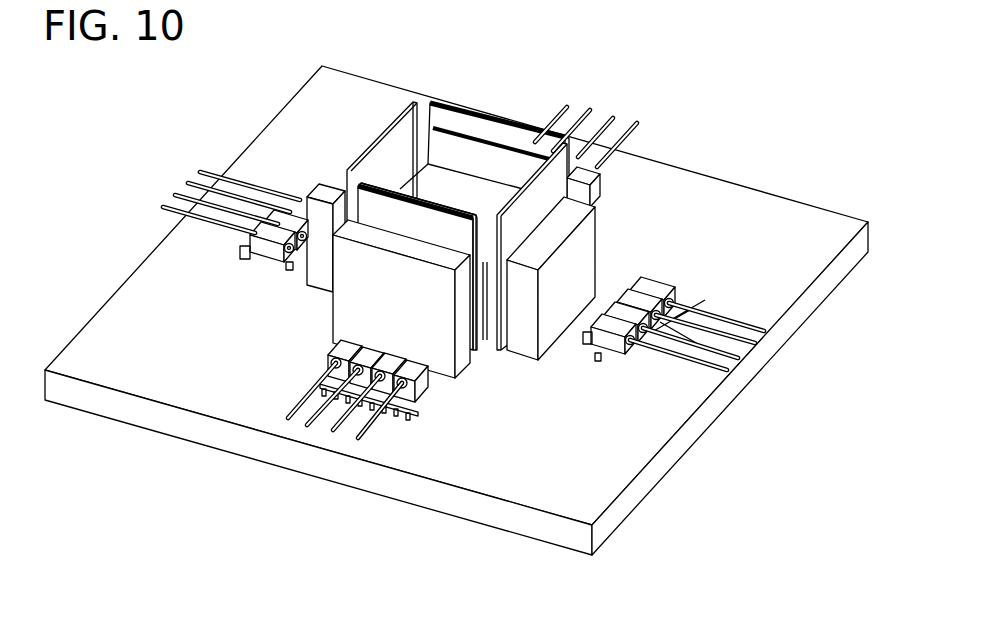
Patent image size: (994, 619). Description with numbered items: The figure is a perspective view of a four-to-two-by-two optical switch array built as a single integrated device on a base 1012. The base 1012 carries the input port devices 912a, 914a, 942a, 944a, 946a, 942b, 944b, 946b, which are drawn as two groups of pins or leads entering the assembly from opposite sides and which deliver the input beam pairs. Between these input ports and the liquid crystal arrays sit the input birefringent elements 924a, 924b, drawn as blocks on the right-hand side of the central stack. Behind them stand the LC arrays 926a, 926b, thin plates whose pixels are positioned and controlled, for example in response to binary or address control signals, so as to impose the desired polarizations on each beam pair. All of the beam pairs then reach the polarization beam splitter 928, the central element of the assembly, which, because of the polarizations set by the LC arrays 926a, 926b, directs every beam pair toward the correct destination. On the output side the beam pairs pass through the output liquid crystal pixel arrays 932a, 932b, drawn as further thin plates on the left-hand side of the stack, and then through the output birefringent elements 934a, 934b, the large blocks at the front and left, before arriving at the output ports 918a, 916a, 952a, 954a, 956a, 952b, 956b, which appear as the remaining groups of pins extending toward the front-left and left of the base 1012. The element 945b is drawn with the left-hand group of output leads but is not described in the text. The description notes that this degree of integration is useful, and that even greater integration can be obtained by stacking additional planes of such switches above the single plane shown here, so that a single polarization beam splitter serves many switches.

The base 1012 is at (655, 489).
The input port device 912a is at (638, 123).
The input port device 914a is at (767, 333).
The output port 916a is at (357, 441).
The output port 918a is at (201, 172).
The input birefringent element 924a is at (572, 178).
The input birefringent element 924b is at (597, 272).
The LC array 926a is at (431, 105).
The LC array 926b is at (534, 209).
The polarization beam splitter 928 is at (457, 209).
The output liquid crystal pixel array 932a is at (390, 122).
The output liquid crystal pixel array 932b is at (417, 266).
The output birefringent element 934a is at (458, 369).
The output birefringent element 934b is at (312, 287).
The input port device 942a is at (614, 119).
The input port device 942b is at (758, 345).
The input port device 944a is at (590, 110).
The input port device 944b is at (740, 361).
The lead pin 945b is at (177, 196).
The input port device 946a is at (566, 106).
The input port device 946b is at (730, 374).
The output port 952a is at (331, 436).
The output port 952b is at (189, 184).
The output port 954a is at (308, 427).
The output port 956a is at (289, 421).
The output port 956b is at (165, 208).